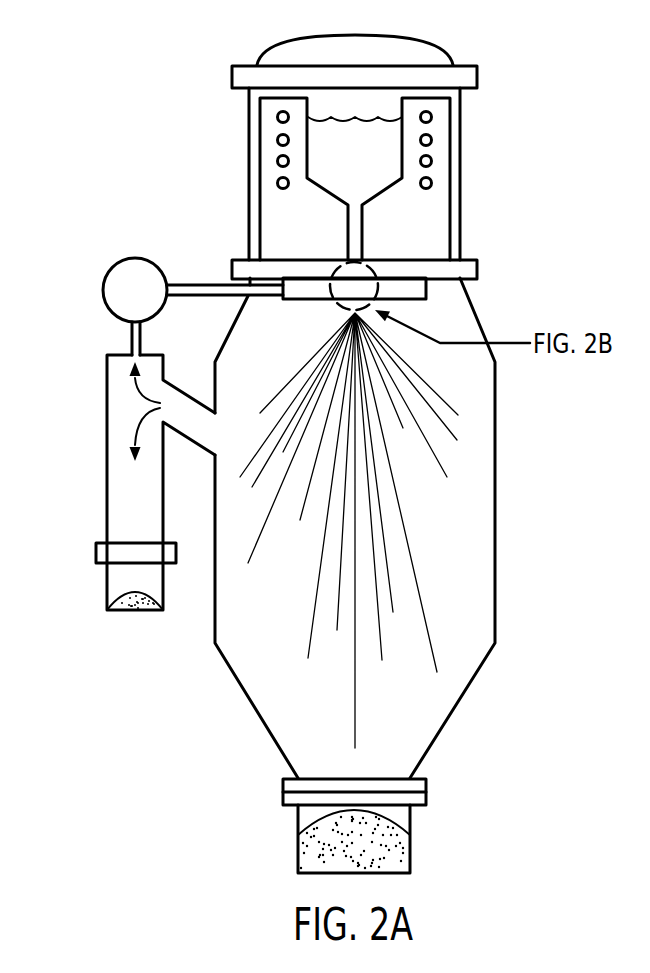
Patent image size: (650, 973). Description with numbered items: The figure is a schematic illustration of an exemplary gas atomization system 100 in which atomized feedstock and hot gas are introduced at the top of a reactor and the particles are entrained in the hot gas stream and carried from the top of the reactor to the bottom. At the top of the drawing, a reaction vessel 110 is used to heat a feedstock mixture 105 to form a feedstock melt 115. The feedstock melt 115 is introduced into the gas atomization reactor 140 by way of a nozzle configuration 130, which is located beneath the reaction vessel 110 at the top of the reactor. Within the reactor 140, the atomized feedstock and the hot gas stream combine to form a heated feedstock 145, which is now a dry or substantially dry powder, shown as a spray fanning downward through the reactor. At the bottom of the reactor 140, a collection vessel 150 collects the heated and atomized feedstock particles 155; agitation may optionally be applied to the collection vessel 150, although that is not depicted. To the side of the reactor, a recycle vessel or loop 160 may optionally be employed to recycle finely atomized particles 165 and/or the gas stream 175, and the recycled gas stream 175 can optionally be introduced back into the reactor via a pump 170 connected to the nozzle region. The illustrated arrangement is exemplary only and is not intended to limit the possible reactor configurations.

The gas atomization system 100 is at (152, 87).
The feedstock mixture 105 is at (360, 98).
The reaction vessel 110 is at (462, 178).
The feedstock melt 115 is at (384, 142).
The nozzle configuration 130 is at (370, 264).
The gas atomization reactor 140 is at (497, 445).
The heated feedstock 145 is at (396, 503).
The collection vessel 150 is at (412, 820).
The heated and atomized feedstock particles 155 is at (400, 852).
The recycle vessel or loop 160 is at (107, 423).
The finely atomized particles 165 is at (115, 597).
The pump 170 is at (120, 264).
The gas stream 175 is at (128, 375).